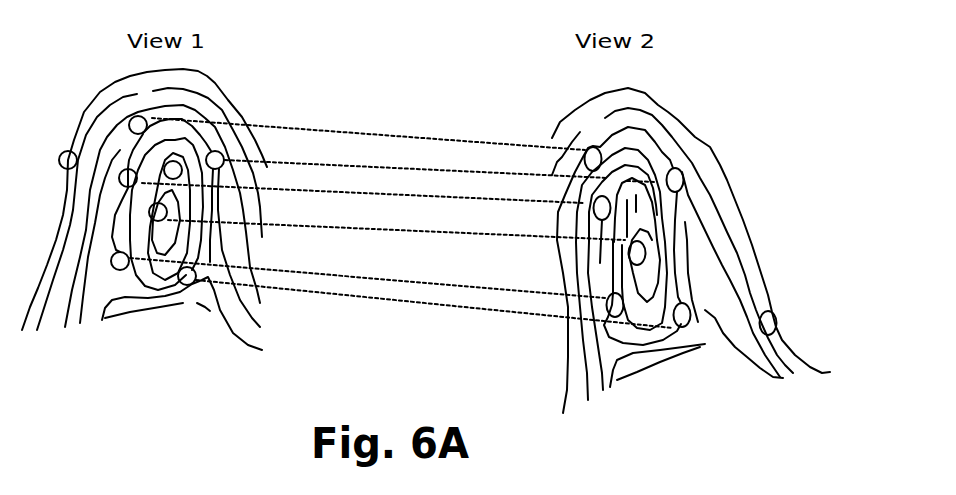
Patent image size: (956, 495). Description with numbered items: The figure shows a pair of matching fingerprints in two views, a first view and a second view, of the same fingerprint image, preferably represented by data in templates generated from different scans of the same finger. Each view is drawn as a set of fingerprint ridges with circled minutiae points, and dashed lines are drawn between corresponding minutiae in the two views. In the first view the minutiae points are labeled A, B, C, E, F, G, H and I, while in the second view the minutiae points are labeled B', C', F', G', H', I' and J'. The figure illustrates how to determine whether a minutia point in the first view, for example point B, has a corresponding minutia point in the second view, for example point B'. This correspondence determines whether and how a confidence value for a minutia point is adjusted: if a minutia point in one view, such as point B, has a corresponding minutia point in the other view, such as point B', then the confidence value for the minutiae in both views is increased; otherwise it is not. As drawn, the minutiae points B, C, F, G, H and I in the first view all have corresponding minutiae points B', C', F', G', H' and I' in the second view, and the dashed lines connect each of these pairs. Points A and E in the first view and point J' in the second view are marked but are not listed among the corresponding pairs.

The minutia point A is at (61, 153).
The minutia point B is at (138, 112).
The minutia point C is at (127, 166).
The minutia point E is at (172, 153).
The minutia point F is at (215, 149).
The minutia point G is at (158, 225).
The minutia point H is at (110, 271).
The minutia point I is at (187, 288).
The corresponding minutia point B' is at (593, 147).
The corresponding minutia point C' is at (612, 202).
The corresponding minutia point F' is at (669, 167).
The corresponding minutia point G' is at (644, 262).
The corresponding minutia point H' is at (609, 294).
The corresponding minutia point I' is at (687, 308).
The minutia point J' is at (773, 313).